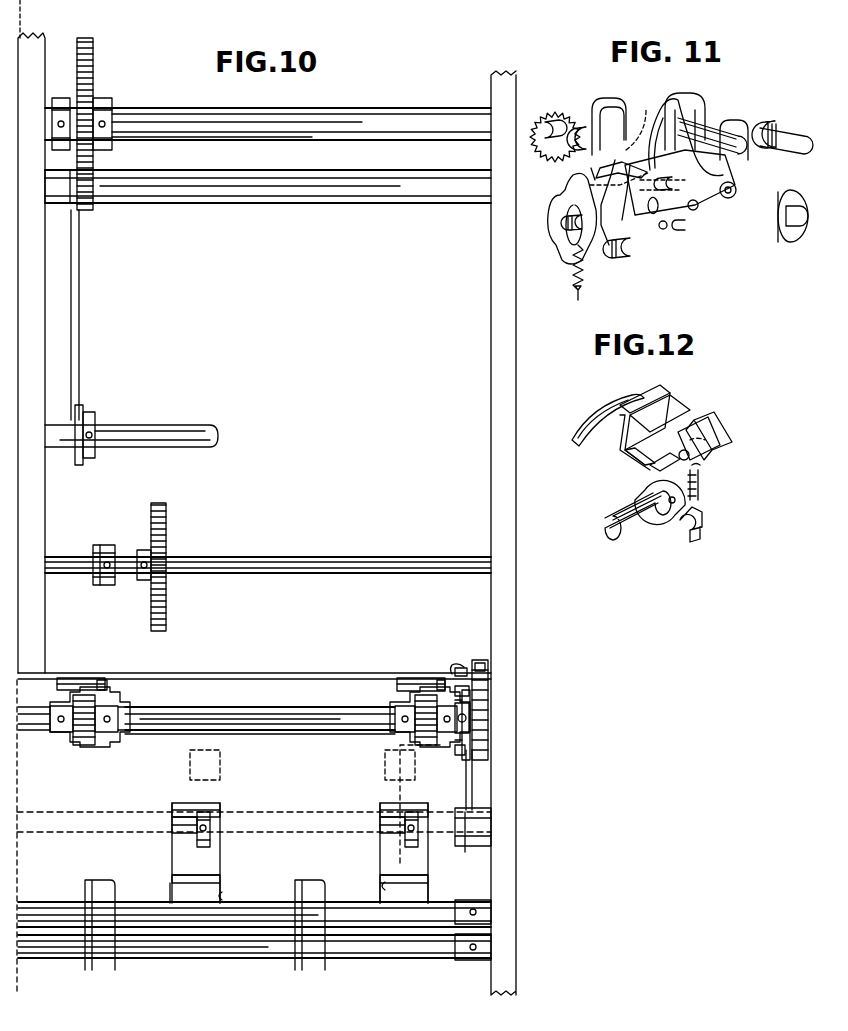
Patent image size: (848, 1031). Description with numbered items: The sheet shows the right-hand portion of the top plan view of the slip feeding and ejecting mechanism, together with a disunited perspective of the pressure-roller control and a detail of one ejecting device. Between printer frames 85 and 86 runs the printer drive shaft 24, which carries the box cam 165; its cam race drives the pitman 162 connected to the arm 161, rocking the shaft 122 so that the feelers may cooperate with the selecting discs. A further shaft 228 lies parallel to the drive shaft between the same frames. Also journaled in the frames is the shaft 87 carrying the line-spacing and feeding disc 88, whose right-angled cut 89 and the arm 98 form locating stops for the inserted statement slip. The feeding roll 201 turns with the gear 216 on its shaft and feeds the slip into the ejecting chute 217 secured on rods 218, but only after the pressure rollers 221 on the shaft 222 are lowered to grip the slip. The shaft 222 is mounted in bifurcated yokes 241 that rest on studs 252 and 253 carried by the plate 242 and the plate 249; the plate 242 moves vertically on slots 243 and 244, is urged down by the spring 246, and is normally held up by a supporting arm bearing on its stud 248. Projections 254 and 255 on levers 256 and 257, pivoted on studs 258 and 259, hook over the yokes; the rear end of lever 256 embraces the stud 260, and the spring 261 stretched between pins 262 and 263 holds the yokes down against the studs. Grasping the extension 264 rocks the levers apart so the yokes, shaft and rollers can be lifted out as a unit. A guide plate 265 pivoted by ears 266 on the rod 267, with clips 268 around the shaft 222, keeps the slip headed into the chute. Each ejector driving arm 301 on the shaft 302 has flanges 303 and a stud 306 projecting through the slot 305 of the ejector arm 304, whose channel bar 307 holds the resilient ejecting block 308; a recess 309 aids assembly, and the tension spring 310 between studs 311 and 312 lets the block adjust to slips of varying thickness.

In FIG. 10, the printer drive shaft 24 is at (142, 112).
In FIG. 10, the printer frame 85 is at (45, 487).
In FIG. 10, the printer frame 86 is at (491, 417).
In FIG. 10, the shaft 87 is at (218, 560).
In FIG. 10, the line-spacing and feeding disc 88 is at (160, 503).
In FIG. 10, the right-angled cut 89 is at (164, 565).
In FIG. 10, the arm 98 is at (97, 545).
In FIG. 10, the shaft 122 is at (195, 430).
In FIG. 10, the arm 161 is at (82, 405).
In FIG. 10, the pitman 162 is at (80, 283).
In FIG. 10, the box cam 165 is at (87, 40).
In FIG. 11, the feeding roll 201 is at (790, 235).
In FIG. 11, the gear 216 is at (565, 112).
In FIG. 10, the ejecting chute 217 is at (180, 720).
In FIG. 10, the rod 218 is at (217, 934).
In FIG. 11, the pressure roller 221 is at (795, 132).
In FIG. 10, the shaft 222 is at (126, 712).
In FIG. 11, the shaft 222 is at (705, 122).
In FIG. 10, the shaft 228 is at (184, 204).
In FIG. 10, the yoke 241 is at (480, 699).
In FIG. 11, the yoke 241 is at (670, 106).
In FIG. 11, the plate 242 is at (580, 253).
In FIG. 11, the slot 243 is at (619, 112).
In FIG. 11, the slot 244 is at (571, 200).
In FIG. 10, the spring 246 is at (462, 666).
In FIG. 11, the spring 246 is at (570, 243).
In FIG. 11, the stud 248 is at (634, 260).
In FIG. 10, the plate 249 is at (483, 657).
In FIG. 11, the stud 252 is at (597, 175).
In FIG. 11, the stud 253 is at (645, 128).
In FIG. 10, the projection 254 is at (465, 730).
In FIG. 11, the projection 254 is at (675, 112).
In FIG. 10, the projection 255 is at (468, 693).
In FIG. 11, the projection 255 is at (716, 135).
In FIG. 10, the lever 256 is at (473, 782).
In FIG. 11, the lever 256 is at (660, 205).
In FIG. 10, the lever 257 is at (473, 672).
In FIG. 11, the lever 257 is at (698, 213).
In FIG. 11, the stud 258 is at (655, 210).
In FIG. 11, the stud 259 is at (708, 196).
In FIG. 11, the stud 260 is at (695, 227).
In FIG. 10, the spring 261 is at (458, 688).
In FIG. 10, the pin 262 is at (463, 766).
In FIG. 11, the pin 262 is at (679, 227).
In FIG. 10, the pin 263 is at (470, 660).
In FIG. 10, the extension 264 is at (471, 810).
In FIG. 11, the extension 264 is at (625, 202).
In FIG. 10, the guide plate 265 is at (201, 673).
In FIG. 10, the ear 266 is at (80, 678).
In FIG. 10, the rod 267 is at (110, 680).
In FIG. 10, the clip 268 is at (232, 713).
In FIG. 12, the ejector driving arm 301 is at (605, 432).
In FIG. 12, the shaft 302 is at (603, 539).
In FIG. 12, the flange 303 is at (590, 419).
In FIG. 12, the ejector arm 304 is at (650, 489).
In FIG. 12, the slot 305 is at (708, 424).
In FIG. 12, the stud 306 is at (655, 467).
In FIG. 12, the channel bar 307 is at (632, 450).
In FIG. 12, the ejecting block 308 is at (675, 411).
In FIG. 12, the recess 309 is at (661, 395).
In FIG. 12, the tension spring 310 is at (698, 487).
In FIG. 12, the stud 311 is at (678, 525).
In FIG. 12, the stud 312 is at (691, 453).